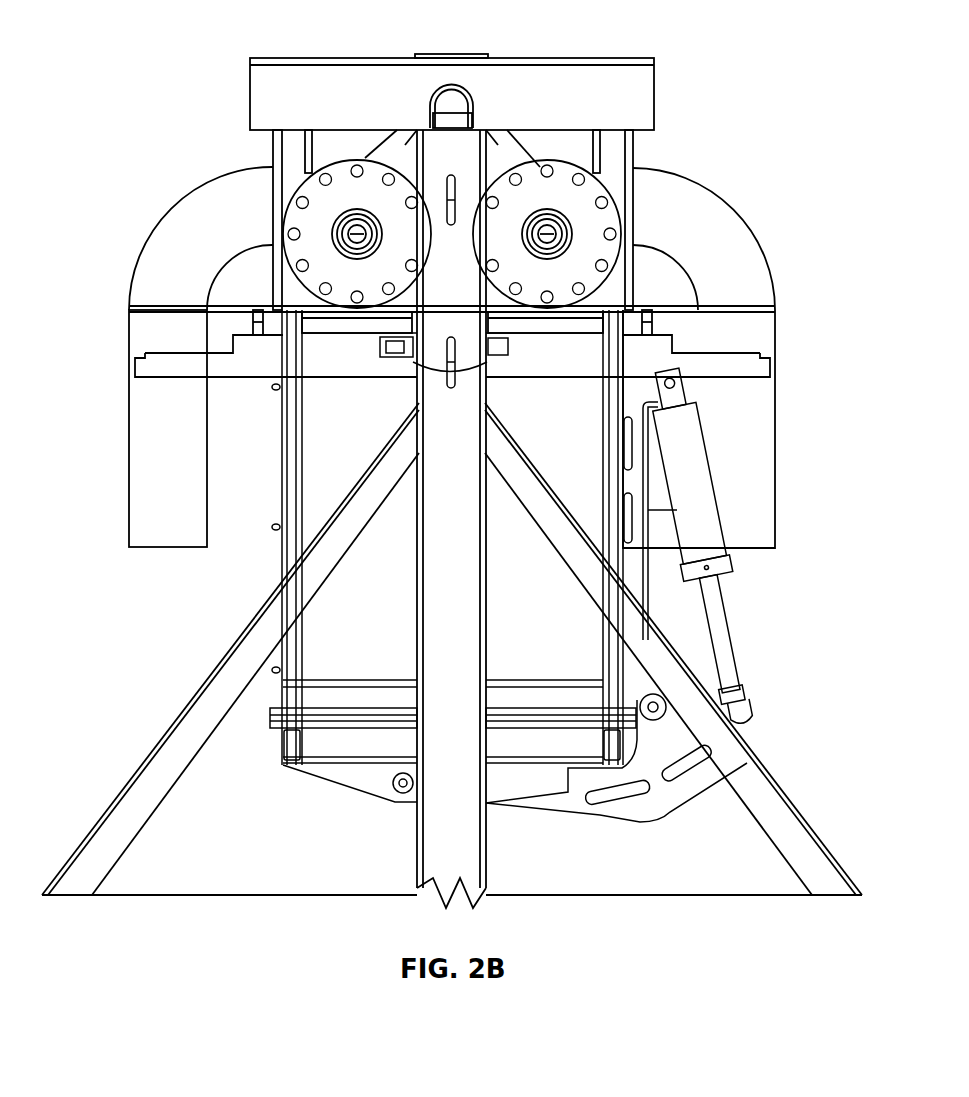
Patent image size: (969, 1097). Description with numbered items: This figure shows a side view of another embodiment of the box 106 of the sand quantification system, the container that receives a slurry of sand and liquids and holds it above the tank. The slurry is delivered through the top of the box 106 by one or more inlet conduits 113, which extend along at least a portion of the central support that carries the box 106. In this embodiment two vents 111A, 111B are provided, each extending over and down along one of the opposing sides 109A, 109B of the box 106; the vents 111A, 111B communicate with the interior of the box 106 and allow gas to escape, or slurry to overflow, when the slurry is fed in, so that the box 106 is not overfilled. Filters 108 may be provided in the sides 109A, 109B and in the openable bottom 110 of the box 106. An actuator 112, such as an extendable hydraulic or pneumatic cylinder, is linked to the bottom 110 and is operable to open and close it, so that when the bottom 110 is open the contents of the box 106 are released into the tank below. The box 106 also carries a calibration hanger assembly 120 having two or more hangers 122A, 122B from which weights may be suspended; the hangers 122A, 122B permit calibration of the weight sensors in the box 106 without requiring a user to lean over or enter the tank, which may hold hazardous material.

The box 106 is at (583, 465).
The filters 108 is at (280, 545).
The side 109A is at (277, 462).
The side 109B is at (613, 550).
The openable bottom 110 is at (355, 775).
The vent 111A is at (195, 202).
The vent 111B is at (715, 208).
The actuator 112 is at (715, 623).
The inlet conduits 113 is at (533, 172).
The calibration hanger assembly 120 is at (305, 362).
The hanger 122A is at (145, 353).
The hanger 122B is at (757, 363).